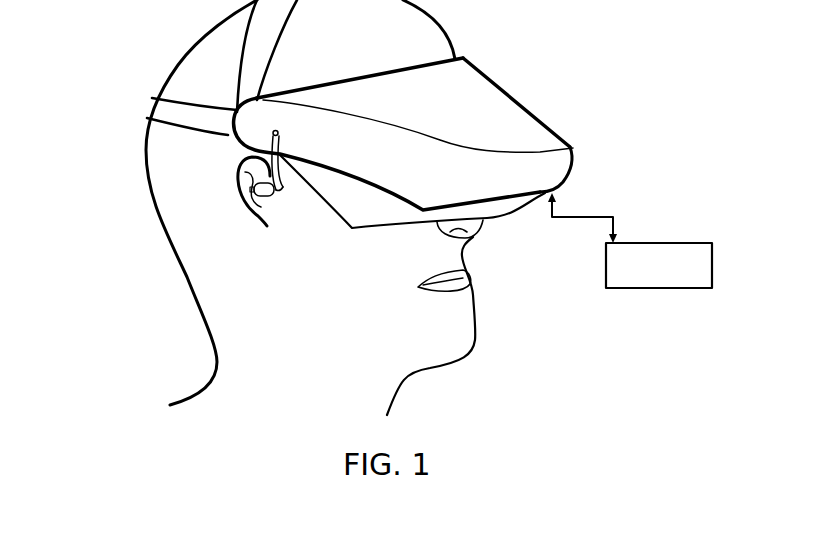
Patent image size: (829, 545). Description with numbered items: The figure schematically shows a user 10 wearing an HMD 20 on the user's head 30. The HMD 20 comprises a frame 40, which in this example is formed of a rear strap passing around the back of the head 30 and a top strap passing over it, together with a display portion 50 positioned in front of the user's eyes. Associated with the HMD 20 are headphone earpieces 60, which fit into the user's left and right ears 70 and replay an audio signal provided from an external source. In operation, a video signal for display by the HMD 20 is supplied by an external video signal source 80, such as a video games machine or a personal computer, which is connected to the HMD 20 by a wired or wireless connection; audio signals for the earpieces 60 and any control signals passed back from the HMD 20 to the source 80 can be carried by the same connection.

The user 10 is at (335, 150).
The HMD 20 is at (423, 133).
The user's head 30 is at (155, 175).
The frame 40 is at (150, 104).
The display portion 50 is at (555, 134).
The headphone earpieces 60 is at (279, 197).
The ears 70 is at (245, 172).
The external video signal source 80 is at (690, 243).